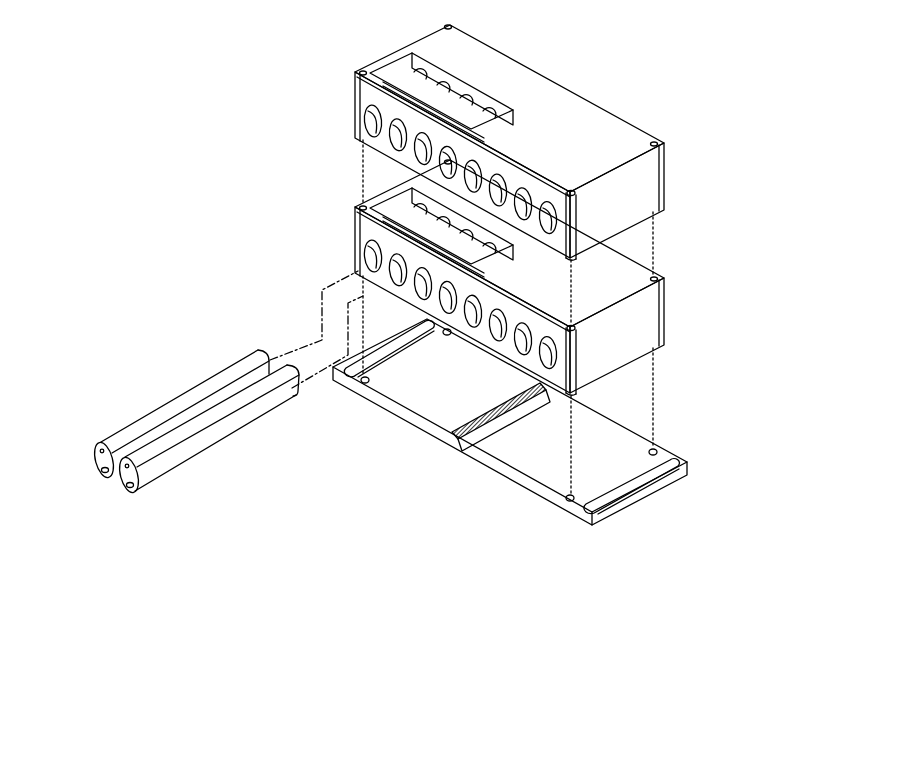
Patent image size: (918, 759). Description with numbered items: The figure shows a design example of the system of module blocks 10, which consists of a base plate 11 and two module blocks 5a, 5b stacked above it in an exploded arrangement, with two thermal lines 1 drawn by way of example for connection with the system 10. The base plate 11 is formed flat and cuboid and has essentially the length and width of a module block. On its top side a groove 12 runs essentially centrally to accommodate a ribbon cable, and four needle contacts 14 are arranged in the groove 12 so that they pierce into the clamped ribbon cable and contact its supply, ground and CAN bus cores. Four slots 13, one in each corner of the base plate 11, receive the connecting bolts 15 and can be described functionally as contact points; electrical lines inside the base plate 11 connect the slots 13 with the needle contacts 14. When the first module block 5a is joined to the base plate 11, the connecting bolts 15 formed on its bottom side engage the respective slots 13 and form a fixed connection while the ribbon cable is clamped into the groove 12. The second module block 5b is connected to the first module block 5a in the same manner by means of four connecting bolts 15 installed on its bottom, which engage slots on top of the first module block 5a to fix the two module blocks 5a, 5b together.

The system of module blocks 10 is at (190, 203).
The thermal lines 1 is at (188, 446).
The first module block 5a is at (593, 287).
The second module block 5b is at (582, 133).
The base plate 11 is at (557, 475).
The groove 12 is at (458, 452).
The slots 13 is at (366, 210).
The needle contacts 14 is at (510, 420).
The connecting bolts 15 is at (577, 262).